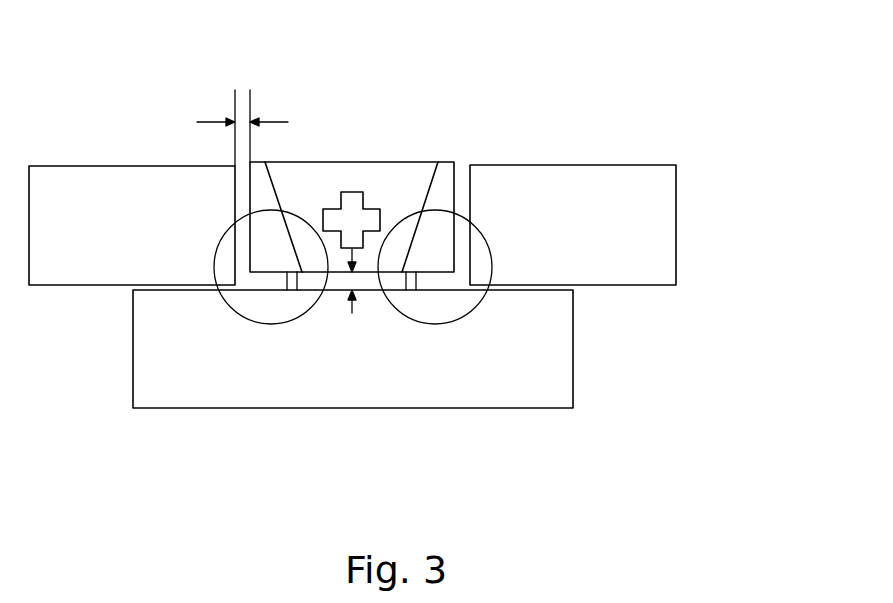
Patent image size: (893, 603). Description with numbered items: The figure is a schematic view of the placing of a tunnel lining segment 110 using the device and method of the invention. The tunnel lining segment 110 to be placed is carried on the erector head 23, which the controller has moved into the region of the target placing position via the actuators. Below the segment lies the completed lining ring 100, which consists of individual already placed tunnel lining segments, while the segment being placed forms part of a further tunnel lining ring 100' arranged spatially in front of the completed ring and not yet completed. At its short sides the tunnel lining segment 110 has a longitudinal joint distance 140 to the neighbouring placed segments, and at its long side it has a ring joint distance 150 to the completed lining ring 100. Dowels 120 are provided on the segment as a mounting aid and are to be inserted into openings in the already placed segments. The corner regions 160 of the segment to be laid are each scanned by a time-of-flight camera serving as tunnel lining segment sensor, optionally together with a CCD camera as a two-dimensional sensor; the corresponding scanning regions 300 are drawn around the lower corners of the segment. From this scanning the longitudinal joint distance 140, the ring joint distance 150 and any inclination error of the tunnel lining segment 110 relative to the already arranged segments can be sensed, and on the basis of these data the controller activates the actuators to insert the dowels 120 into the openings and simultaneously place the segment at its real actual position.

The further tunnel lining ring 100' is at (411, 225).
The tunnel lining segment 110 is at (665, 207).
The lining ring 100 is at (407, 349).
The longitudinal joint distance 140 is at (240, 108).
The corner regions 160 is at (272, 268).
The erector head 23 is at (353, 205).
The ring joint distance 150 is at (353, 281).
The dowels 120 is at (417, 282).
The scanning regions 300 is at (230, 308).